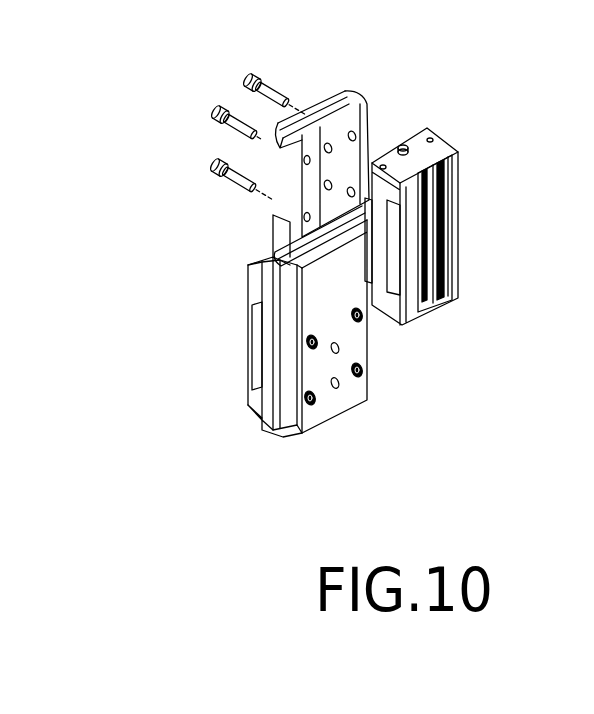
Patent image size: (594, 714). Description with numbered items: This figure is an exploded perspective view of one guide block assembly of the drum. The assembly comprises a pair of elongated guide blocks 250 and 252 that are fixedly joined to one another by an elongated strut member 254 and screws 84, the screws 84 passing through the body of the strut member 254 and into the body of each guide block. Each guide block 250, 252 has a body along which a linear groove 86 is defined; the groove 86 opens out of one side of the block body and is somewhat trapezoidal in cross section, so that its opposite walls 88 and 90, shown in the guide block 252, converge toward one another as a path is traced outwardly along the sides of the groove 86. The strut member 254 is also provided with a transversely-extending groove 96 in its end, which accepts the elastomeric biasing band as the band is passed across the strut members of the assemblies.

The screws 84 is at (214, 163).
The linear groove 86 is at (460, 228).
The groove wall 88 is at (428, 304).
The groove wall 90 is at (440, 303).
The transversely-extending groove 96 is at (320, 100).
The guide block 250 is at (250, 343).
The guide block 252 is at (460, 263).
The strut member 254 is at (357, 342).